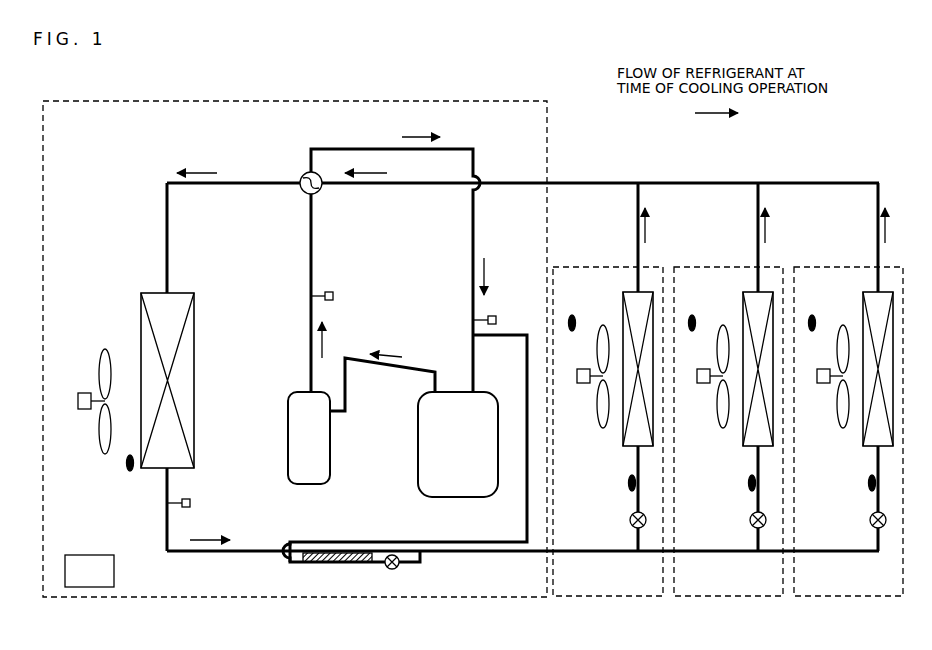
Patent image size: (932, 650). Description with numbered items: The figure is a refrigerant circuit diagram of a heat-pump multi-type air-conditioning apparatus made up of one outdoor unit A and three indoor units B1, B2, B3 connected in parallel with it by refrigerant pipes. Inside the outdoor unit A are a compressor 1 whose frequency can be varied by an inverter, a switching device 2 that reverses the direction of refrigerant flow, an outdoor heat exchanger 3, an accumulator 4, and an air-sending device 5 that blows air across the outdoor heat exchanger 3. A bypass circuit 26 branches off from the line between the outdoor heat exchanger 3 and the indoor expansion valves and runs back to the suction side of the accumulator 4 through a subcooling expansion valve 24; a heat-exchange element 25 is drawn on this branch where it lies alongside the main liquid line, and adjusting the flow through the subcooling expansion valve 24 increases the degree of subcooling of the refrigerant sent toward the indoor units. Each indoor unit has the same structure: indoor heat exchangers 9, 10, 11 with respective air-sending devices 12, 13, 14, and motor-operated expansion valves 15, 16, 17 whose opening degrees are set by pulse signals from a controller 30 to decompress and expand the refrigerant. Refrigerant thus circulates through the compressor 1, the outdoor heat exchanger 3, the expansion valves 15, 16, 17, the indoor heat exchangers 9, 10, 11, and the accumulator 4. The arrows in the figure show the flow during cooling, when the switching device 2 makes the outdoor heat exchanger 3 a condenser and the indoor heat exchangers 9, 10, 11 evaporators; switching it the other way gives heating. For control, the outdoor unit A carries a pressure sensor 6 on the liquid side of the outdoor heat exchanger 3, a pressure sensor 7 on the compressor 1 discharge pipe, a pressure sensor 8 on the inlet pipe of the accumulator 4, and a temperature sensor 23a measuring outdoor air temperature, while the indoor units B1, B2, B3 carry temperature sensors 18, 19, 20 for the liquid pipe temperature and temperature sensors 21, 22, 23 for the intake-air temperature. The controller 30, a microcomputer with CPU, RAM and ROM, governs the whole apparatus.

The outdoor unit A is at (547, 143).
The indoor unit B1 is at (605, 267).
The indoor unit B2 is at (725, 267).
The indoor unit B3 is at (845, 267).
The compressor 1 is at (331, 444).
The switching device 2 is at (301, 175).
The outdoor heat exchanger 3 is at (141, 302).
The accumulator 4 is at (470, 497).
The air-sending device 5 is at (100, 368).
The pressure sensor 6 is at (192, 503).
The pressure sensor 7 is at (336, 296).
The pressure sensor 8 is at (497, 318).
The indoor heat exchanger 9 is at (623, 296).
The indoor heat exchanger 10 is at (743, 296).
The indoor heat exchanger 11 is at (863, 296).
The air-sending device 12 is at (603, 430).
The air-sending device 13 is at (723, 430).
The air-sending device 14 is at (843, 430).
The expansion valve 15 is at (629, 520).
The expansion valve 16 is at (749, 520).
The expansion valve 17 is at (869, 520).
The temperature sensor 18 is at (626, 483).
The temperature sensor 19 is at (746, 483).
The temperature sensor 20 is at (866, 483).
The temperature sensor 21 is at (577, 321).
The temperature sensor 22 is at (697, 321).
The temperature sensor 23 is at (817, 321).
The temperature sensor 23a is at (125, 466).
The subcooling expansion valve 24 is at (392, 569).
The subcooling heat exchanger 25 is at (335, 563).
The bypass circuit 26 is at (436, 561).
The controller 30 is at (90, 588).